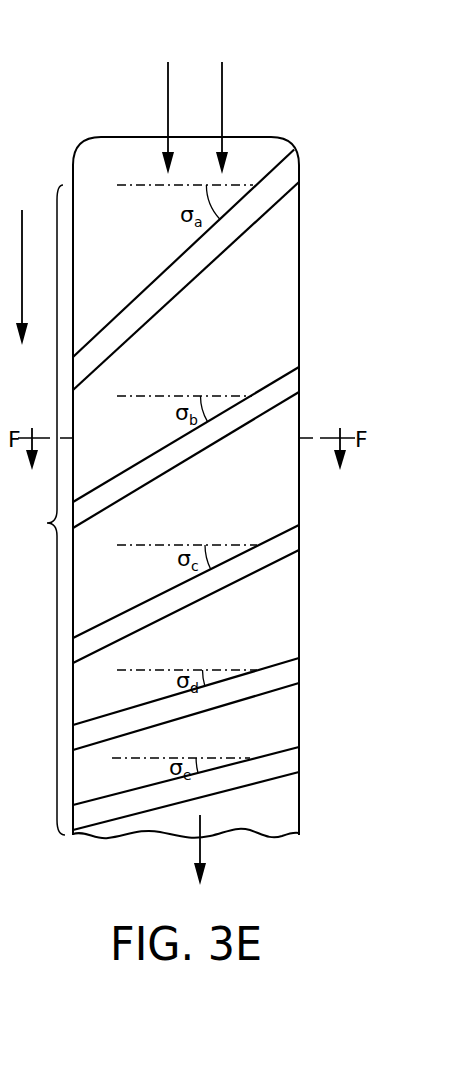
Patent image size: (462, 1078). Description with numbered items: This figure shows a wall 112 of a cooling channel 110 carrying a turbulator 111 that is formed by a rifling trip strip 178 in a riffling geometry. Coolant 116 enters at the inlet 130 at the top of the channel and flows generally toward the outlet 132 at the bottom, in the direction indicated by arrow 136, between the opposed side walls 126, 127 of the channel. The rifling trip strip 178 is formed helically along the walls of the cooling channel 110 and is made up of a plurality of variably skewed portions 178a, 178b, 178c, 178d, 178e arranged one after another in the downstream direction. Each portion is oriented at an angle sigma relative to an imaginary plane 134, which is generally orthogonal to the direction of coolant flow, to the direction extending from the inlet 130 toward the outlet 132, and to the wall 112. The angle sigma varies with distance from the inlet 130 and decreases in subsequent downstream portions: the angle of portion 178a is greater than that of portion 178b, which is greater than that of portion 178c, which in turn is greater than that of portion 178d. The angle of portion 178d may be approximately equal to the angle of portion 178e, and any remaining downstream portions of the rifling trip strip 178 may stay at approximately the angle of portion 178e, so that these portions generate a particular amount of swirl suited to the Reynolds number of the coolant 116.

The cooling channel 110 is at (182, 467).
The turbulator 111 is at (41, 510).
The wall 112 is at (115, 221).
The coolant 116 is at (194, 104).
The wall 126 is at (74, 800).
The wall 127 is at (298, 816).
The inlet 130 is at (236, 136).
The outlet 132 is at (200, 863).
The imaginary plane 134 is at (230, 184).
The arrow 136 is at (22, 262).
The rifling trip strip 178 is at (228, 490).
The portion 178a is at (235, 220).
The portion 178b is at (253, 403).
The portion 178c is at (255, 559).
The portion 178d is at (245, 688).
The portion 178e is at (248, 773).